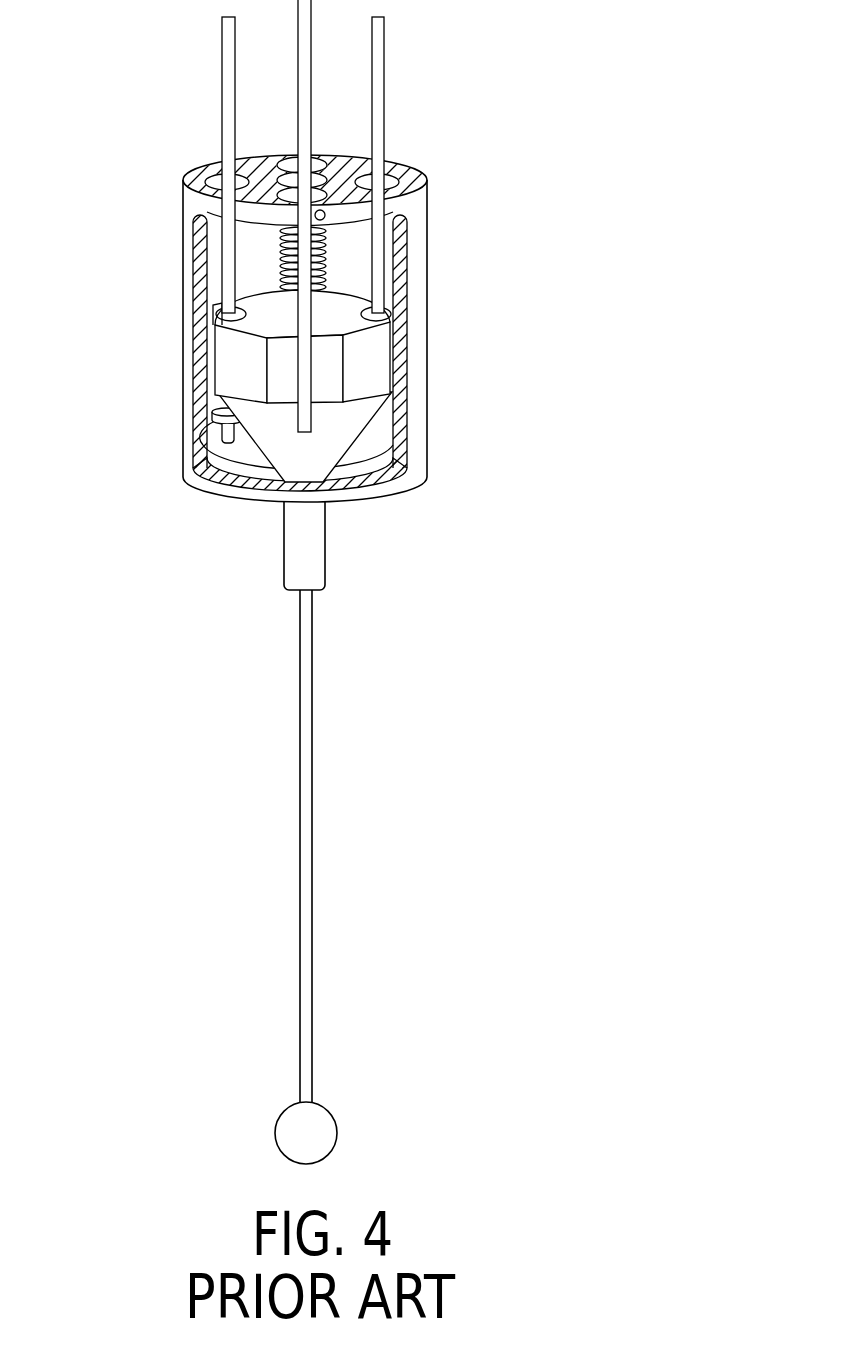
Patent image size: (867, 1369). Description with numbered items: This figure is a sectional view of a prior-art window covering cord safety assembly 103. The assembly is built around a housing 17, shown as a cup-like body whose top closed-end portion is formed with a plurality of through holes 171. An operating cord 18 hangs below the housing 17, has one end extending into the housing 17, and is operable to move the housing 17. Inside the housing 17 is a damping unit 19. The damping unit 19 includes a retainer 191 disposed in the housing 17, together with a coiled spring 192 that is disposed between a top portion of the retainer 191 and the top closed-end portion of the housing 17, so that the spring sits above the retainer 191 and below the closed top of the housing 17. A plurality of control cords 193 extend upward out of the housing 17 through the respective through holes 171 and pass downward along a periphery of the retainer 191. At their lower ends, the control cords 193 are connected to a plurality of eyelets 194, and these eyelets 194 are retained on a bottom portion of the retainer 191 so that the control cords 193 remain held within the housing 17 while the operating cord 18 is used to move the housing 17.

The window covering cord safety assembly 103 is at (327, 582).
The housing 17 is at (302, 310).
The through holes 171 is at (217, 177).
The operating cord 18 is at (312, 797).
The damping unit 19 is at (281, 242).
The retainer 191 is at (233, 370).
The coiled spring 192 is at (281, 277).
The control cords 193 is at (223, 70).
The eyelets 194 is at (218, 438).